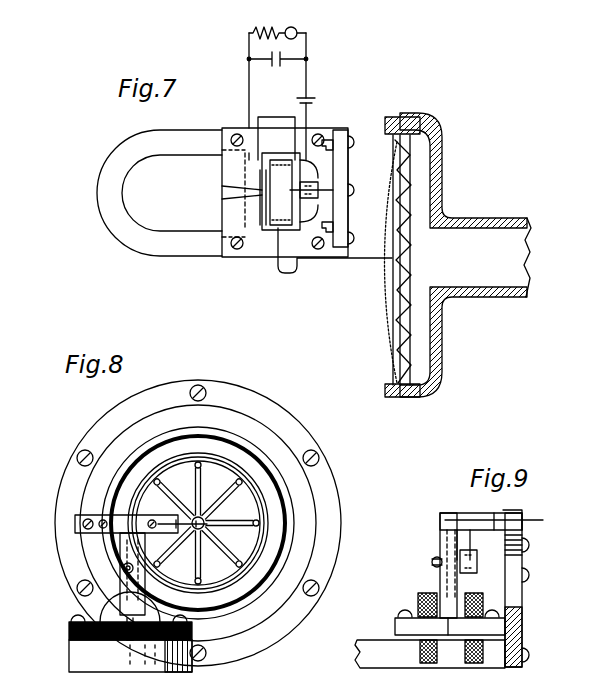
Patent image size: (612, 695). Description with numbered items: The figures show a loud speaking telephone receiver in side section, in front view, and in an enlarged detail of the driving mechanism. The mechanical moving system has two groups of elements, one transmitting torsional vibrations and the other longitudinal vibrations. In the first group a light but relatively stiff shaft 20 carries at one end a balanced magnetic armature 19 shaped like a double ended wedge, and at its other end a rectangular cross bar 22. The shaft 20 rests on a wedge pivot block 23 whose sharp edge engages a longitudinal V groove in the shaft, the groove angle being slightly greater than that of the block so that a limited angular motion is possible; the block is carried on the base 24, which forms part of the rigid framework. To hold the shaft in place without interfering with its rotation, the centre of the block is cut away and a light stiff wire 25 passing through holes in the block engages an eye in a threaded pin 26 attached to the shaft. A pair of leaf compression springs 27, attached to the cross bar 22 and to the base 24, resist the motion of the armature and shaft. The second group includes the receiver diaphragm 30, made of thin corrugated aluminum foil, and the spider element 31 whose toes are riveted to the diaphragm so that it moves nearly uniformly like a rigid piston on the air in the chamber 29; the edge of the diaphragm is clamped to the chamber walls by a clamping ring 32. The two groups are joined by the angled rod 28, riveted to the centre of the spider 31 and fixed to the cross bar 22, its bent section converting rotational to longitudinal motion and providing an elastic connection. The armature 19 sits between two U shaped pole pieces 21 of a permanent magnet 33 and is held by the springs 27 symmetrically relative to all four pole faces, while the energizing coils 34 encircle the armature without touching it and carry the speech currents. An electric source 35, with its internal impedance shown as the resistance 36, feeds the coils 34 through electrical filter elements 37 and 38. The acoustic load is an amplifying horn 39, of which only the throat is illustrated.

In FIG. 7, the balanced magnetic armature 19 is at (250, 190).
In FIG. 8, the balanced magnetic armature 19 is at (128, 640).
In FIG. 9, the balanced magnetic armature 19 is at (396, 625).
In FIG. 8, the shaft 20 is at (126, 575).
In FIG. 9, the shaft 20 is at (447, 588).
In FIG. 7, the U shaped pole pieces 21 is at (226, 168).
In FIG. 8, the U shaped pole pieces 21 is at (68, 628).
In FIG. 7, the rectangular cross bar 22 is at (270, 232).
In FIG. 8, the rectangular cross bar 22 is at (76, 518).
In FIG. 9, the rectangular cross bar 22 is at (442, 514).
In FIG. 7, the wedge pivot block 23 is at (343, 183).
In FIG. 8, the wedge pivot block 23 is at (107, 542).
In FIG. 9, the wedge pivot block 23 is at (490, 548).
In FIG. 7, the base 24 is at (345, 206).
In FIG. 8, the base 24 is at (120, 548).
In FIG. 9, the base 24 is at (523, 607).
In FIG. 9, the wire 25 is at (478, 565).
In FIG. 8, the threaded pin 26 is at (124, 572).
In FIG. 9, the threaded pin 26 is at (434, 560).
In FIG. 7, the leaf compression springs 27 is at (330, 168).
In FIG. 9, the leaf compression springs 27 is at (472, 514).
In FIG. 7, the angled rod 28 is at (353, 258).
In FIG. 8, the angled rod 28 is at (215, 536).
In FIG. 9, the angled rod 28 is at (530, 520).
In FIG. 7, the air chamber 29 is at (418, 348).
In FIG. 7, the receiver diaphragm 30 is at (408, 160).
In FIG. 8, the receiver diaphragm 30 is at (133, 447).
In FIG. 7, the spider element 31 is at (386, 282).
In FIG. 8, the spider element 31 is at (178, 516).
In FIG. 7, the clamping ring 32 is at (400, 116).
In FIG. 8, the clamping ring 32 is at (272, 412).
In FIG. 7, the permanent magnet 33 is at (112, 171).
In FIG. 8, the permanent magnet 33 is at (68, 657).
In FIG. 9, the permanent magnet 33 is at (357, 657).
In FIG. 7, the energizing coils 34 is at (284, 160).
In FIG. 8, the energizing coils 34 is at (130, 607).
In FIG. 9, the energizing coils 34 is at (472, 665).
In FIG. 7, the electric source 35 is at (300, 28).
In FIG. 7, the resistance 36 is at (262, 31).
In FIG. 7, the electrical filter element 37 is at (282, 64).
In FIG. 7, the electrical filter element 38 is at (300, 101).
In FIG. 7, the amplifying horn 39 is at (500, 287).